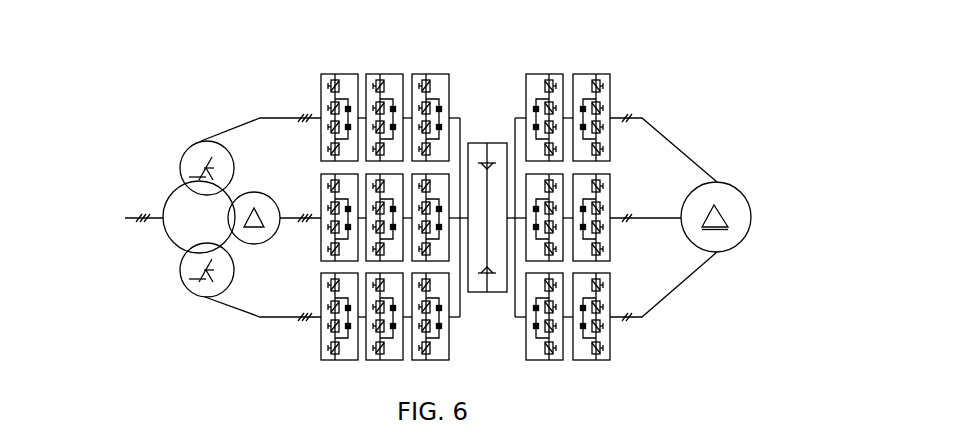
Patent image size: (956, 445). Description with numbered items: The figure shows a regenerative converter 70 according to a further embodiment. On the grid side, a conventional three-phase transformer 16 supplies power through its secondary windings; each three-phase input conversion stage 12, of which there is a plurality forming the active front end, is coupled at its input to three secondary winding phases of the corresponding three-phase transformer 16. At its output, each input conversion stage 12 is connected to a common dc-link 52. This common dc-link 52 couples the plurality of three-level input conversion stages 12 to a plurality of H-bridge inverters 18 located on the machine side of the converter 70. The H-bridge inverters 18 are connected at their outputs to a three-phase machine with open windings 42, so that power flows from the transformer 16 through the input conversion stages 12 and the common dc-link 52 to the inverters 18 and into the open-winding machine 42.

The regenerative converter 70 is at (488, 28).
The three-phase transformer 16 is at (179, 143).
The three-phase input conversion stage 12 is at (352, 70).
The common dc-link 52 is at (487, 137).
The H-bridge inverter 18 is at (595, 68).
The three-phase machine with open windings 42 is at (739, 183).